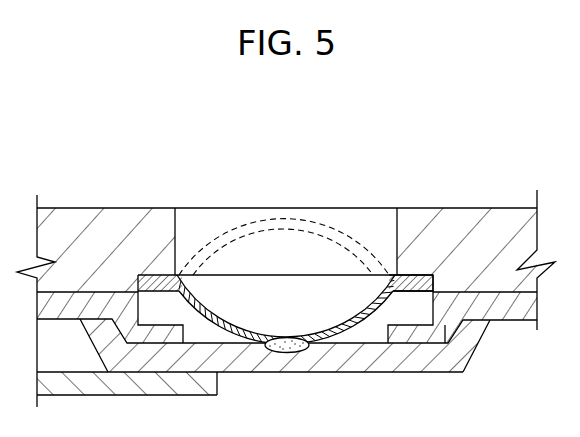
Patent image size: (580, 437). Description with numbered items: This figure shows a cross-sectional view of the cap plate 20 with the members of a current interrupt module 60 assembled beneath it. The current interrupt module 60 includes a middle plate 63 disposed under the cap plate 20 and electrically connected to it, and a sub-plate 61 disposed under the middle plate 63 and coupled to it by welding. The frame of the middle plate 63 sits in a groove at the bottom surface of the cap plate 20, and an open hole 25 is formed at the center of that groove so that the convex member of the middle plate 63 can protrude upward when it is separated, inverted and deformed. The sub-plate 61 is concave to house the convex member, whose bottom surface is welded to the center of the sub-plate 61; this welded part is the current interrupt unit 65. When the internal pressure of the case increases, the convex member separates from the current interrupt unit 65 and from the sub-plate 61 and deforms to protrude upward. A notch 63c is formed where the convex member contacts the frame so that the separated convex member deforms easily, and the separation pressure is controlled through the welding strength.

The cap plate 20 is at (68, 218).
The open hole 25 is at (336, 208).
The current interrupt module 60 is at (272, 234).
The sub-plate 61 is at (128, 293).
The middle plate 63 is at (285, 250).
The notch 63c is at (386, 280).
The current interrupt unit 65 is at (287, 254).